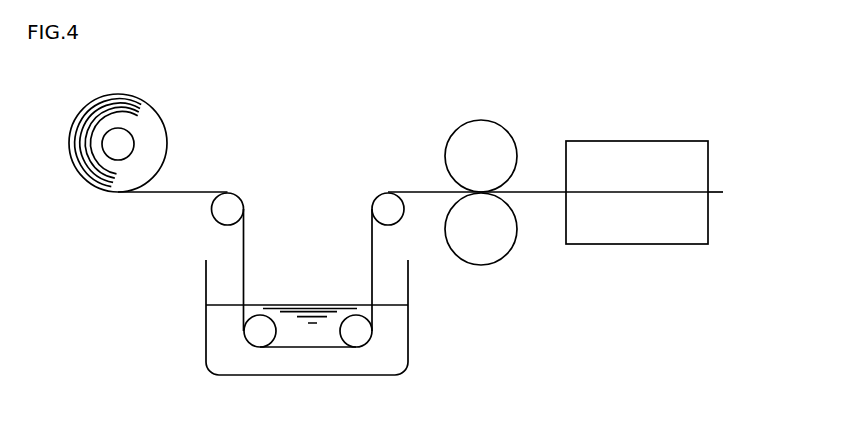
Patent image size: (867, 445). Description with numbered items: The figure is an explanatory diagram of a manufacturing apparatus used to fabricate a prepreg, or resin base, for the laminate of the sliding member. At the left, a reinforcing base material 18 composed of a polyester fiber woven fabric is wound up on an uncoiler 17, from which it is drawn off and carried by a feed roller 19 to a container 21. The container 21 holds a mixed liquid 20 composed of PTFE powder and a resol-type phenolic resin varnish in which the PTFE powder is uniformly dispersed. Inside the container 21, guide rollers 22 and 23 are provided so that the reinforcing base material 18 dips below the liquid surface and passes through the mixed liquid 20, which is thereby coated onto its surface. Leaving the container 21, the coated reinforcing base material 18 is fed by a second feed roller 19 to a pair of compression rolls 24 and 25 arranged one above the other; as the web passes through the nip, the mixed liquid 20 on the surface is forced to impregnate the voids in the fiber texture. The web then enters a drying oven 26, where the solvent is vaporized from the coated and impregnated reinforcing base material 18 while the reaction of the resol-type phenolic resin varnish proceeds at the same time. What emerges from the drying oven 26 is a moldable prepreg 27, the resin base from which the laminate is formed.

The uncoiler 17 is at (113, 138).
The reinforcing base material 18 is at (185, 190).
The feed roller 19 is at (225, 208).
The mixed liquid 20 is at (300, 312).
The container 21 is at (408, 327).
The guide roller 22 is at (262, 338).
The guide roller 23 is at (357, 338).
The compression roll 24 is at (477, 142).
The compression roll 25 is at (482, 250).
The drying oven 26 is at (633, 140).
The prepreg 27 is at (713, 188).